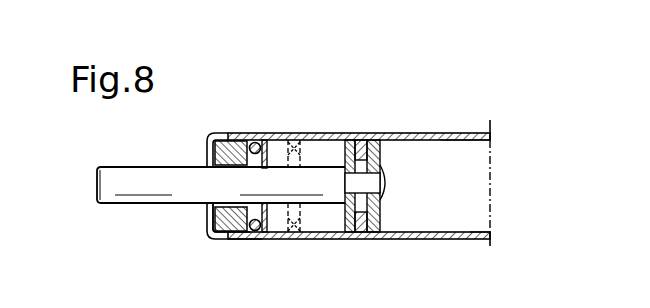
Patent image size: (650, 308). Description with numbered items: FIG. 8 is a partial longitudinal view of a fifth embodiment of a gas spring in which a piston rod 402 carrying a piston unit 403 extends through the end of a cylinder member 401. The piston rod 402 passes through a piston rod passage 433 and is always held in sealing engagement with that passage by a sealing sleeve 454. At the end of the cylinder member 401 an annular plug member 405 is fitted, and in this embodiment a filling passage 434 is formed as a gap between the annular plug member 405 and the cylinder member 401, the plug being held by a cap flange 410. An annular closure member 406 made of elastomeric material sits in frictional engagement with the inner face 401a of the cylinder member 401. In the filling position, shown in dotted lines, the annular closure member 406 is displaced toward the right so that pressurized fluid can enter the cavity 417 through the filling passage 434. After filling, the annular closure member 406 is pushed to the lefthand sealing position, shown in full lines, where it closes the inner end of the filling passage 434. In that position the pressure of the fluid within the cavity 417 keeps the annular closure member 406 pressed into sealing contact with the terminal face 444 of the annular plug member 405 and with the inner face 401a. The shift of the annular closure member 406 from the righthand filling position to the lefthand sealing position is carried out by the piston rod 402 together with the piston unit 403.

The cylinder member 401 is at (455, 133).
The inner face 401a is at (477, 141).
The piston rod 402 is at (153, 190).
The piston unit 403 is at (390, 145).
The annular plug member 405 is at (228, 134).
The annular closure member 406 is at (263, 139).
The cap flange 410 is at (252, 238).
The cavity 417 is at (477, 212).
The piston rod passage 433 is at (210, 226).
The filling passage 434 is at (226, 240).
The terminal face 444 is at (260, 167).
The sealing sleeve 454 is at (216, 161).